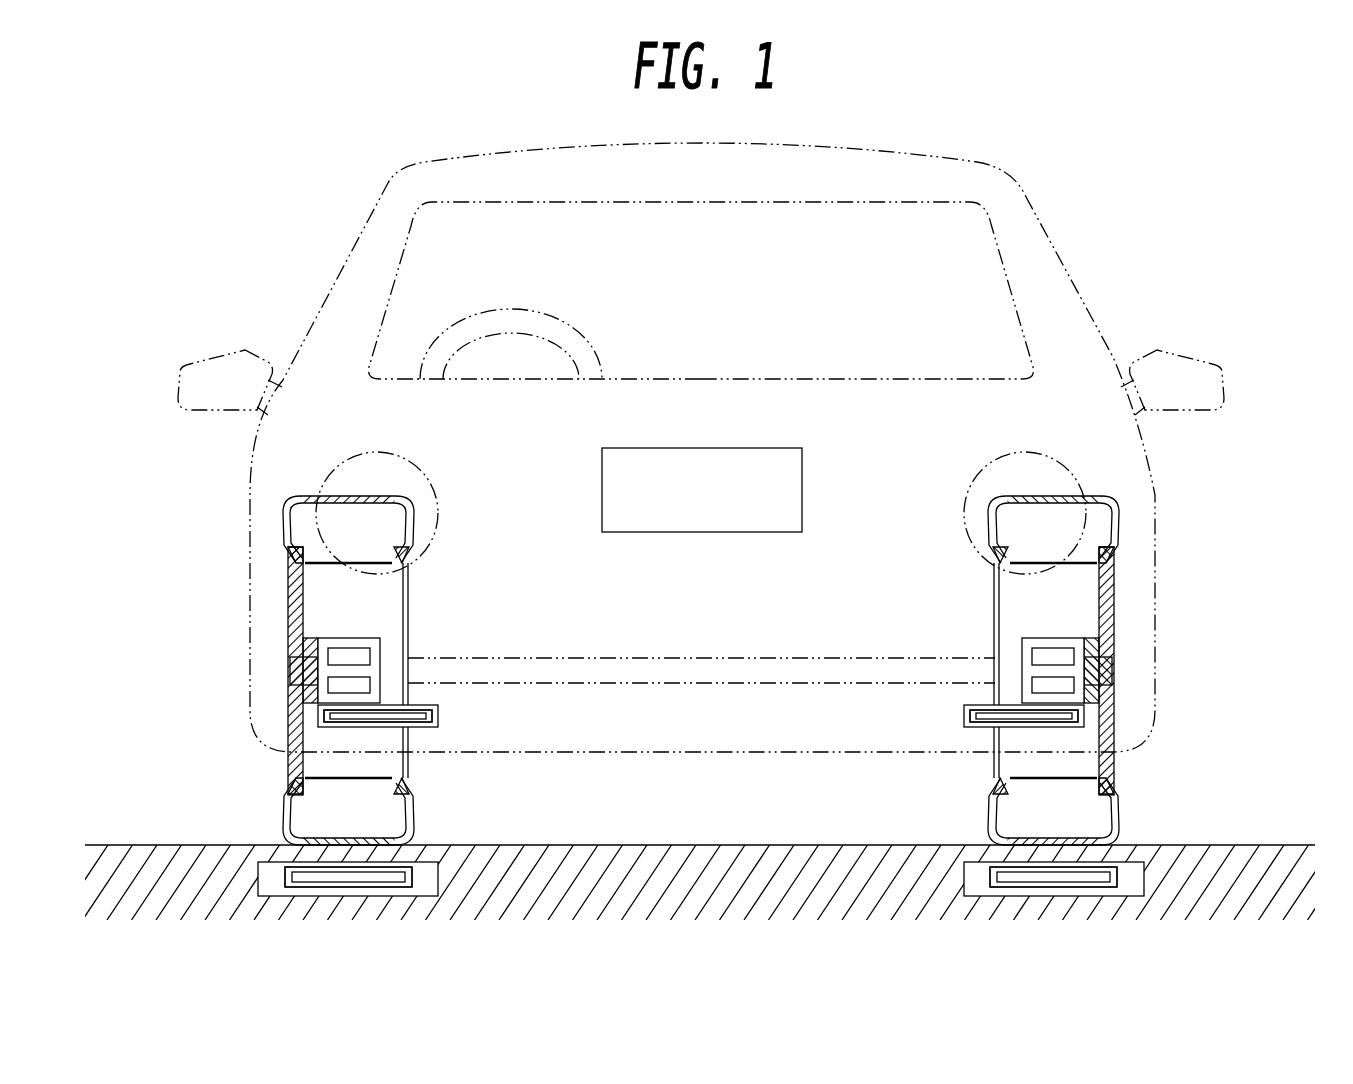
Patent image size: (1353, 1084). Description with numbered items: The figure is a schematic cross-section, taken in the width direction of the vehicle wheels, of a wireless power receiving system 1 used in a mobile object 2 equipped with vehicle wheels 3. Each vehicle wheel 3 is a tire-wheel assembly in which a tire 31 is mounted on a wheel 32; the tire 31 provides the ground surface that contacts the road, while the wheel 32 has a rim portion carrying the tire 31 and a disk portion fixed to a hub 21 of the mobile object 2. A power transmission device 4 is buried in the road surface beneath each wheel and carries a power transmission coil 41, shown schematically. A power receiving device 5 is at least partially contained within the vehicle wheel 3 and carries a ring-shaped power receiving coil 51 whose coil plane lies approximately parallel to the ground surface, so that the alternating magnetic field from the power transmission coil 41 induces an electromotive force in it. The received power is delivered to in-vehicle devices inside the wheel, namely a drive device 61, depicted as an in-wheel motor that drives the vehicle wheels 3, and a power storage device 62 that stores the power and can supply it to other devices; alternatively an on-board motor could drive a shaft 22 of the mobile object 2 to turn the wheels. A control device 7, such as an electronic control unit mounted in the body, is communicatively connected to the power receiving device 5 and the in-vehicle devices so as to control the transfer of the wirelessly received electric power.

The wireless power receiving system 1 is at (700, 475).
The mobile object 2 is at (893, 168).
The vehicle wheel 3 is at (700, 670).
The tire 31 is at (282, 523).
The wheel 32 is at (283, 593).
The hub 21 is at (701, 641).
The shaft 22 is at (697, 676).
The drive device 61 is at (370, 656).
The power storage device 62 is at (371, 683).
The power receiving device 5 is at (701, 720).
The power receiving coil 51 is at (439, 718).
The control device 7 is at (803, 488).
The power transmission device 4 is at (683, 915).
The power transmission coil 41 is at (338, 897).